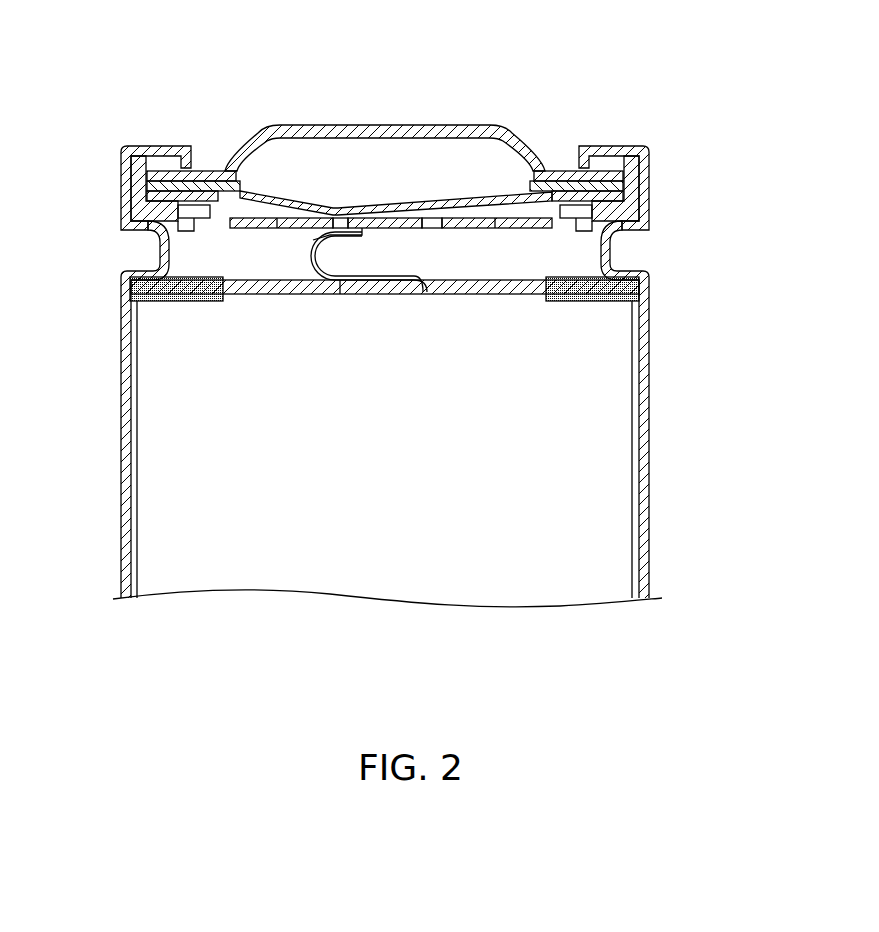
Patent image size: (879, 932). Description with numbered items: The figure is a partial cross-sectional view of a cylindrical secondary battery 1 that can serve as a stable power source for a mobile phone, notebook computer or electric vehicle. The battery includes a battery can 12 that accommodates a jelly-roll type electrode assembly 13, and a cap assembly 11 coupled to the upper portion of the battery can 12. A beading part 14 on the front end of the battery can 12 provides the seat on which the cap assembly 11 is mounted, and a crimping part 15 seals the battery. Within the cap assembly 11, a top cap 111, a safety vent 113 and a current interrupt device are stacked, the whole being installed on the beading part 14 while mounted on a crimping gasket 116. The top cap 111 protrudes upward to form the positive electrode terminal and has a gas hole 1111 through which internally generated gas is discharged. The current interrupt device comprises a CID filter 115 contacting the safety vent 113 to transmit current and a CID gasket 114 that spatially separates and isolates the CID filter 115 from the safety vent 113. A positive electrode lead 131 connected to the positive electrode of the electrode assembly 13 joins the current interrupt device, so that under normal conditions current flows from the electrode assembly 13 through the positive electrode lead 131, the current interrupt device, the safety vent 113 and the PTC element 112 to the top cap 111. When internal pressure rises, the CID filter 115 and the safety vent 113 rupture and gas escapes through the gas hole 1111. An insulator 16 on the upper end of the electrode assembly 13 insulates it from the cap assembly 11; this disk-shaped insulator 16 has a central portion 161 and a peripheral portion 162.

The cylindrical secondary battery 1 is at (503, 78).
The cap assembly 11 is at (747, 123).
The top cap 111 is at (640, 183).
The gas hole 1111 is at (248, 142).
The PTC element 112 is at (640, 190).
The safety vent 113 is at (640, 200).
The CID gasket 114 is at (606, 221).
The CID filter 115 is at (622, 262).
The crimping gasket 116 is at (640, 207).
The battery can 12 is at (648, 418).
The electrode assembly 13 is at (615, 498).
The positive electrode lead 131 is at (311, 250).
The beading part 14 is at (161, 246).
The crimping part 15 is at (162, 147).
The insulator 16 is at (113, 288).
The central portion 161 is at (383, 287).
The peripheral portion 162 is at (190, 299).